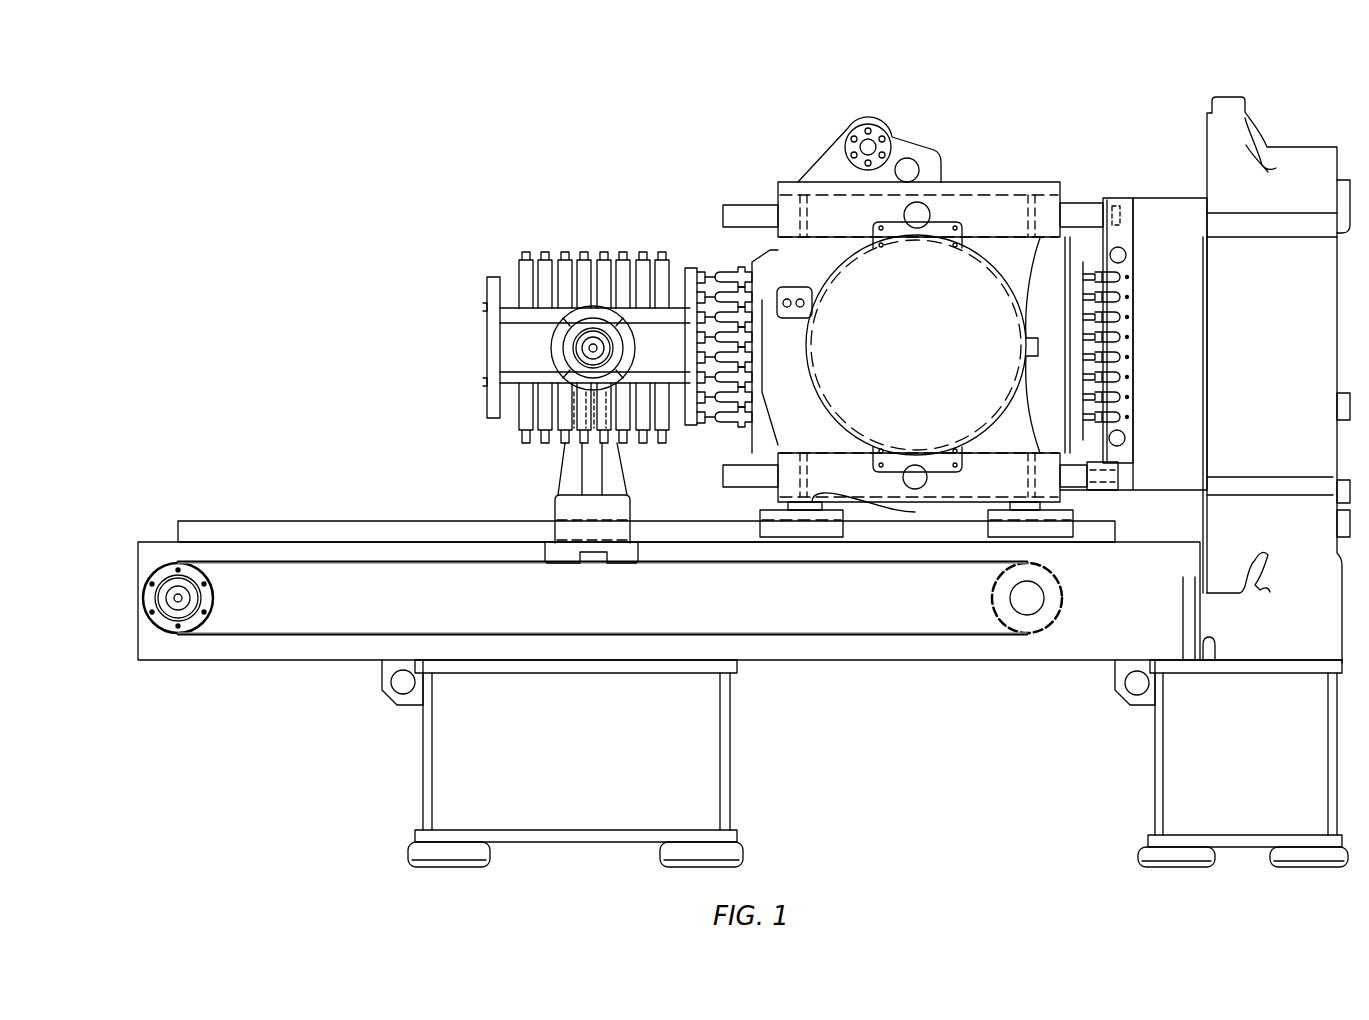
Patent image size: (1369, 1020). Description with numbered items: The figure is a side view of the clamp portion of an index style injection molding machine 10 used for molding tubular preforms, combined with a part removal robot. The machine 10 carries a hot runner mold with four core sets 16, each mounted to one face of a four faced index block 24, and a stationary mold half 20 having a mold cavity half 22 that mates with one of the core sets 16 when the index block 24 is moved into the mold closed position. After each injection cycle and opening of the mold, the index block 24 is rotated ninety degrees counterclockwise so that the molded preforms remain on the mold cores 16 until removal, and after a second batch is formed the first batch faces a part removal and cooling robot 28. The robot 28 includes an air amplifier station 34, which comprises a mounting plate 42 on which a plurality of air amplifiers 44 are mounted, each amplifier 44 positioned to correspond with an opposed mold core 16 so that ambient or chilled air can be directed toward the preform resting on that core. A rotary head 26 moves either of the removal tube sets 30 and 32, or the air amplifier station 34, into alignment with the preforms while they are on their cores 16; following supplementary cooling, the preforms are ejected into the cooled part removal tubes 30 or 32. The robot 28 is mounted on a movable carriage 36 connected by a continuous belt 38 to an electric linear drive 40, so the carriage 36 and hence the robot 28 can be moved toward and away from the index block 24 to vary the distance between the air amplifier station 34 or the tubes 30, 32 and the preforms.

The injection molding machine 10 is at (1073, 118).
The core sets 16 is at (722, 280).
The stationary mold half 20 is at (1150, 198).
The mold cavity half 22 is at (1100, 265).
The index block 24 is at (933, 352).
The rotary head 26 is at (575, 350).
The part removal and cooling robot 28 is at (500, 258).
The part removal tubes 30 is at (580, 262).
The part removal tubes 32 is at (520, 432).
The air amplifier station 34 is at (690, 264).
The movable carriage 36 is at (618, 480).
The continuous belt 38 is at (888, 630).
The electric linear drive 40 is at (1033, 598).
The mounting plate 42 is at (693, 428).
The air amplifiers 44 is at (706, 422).